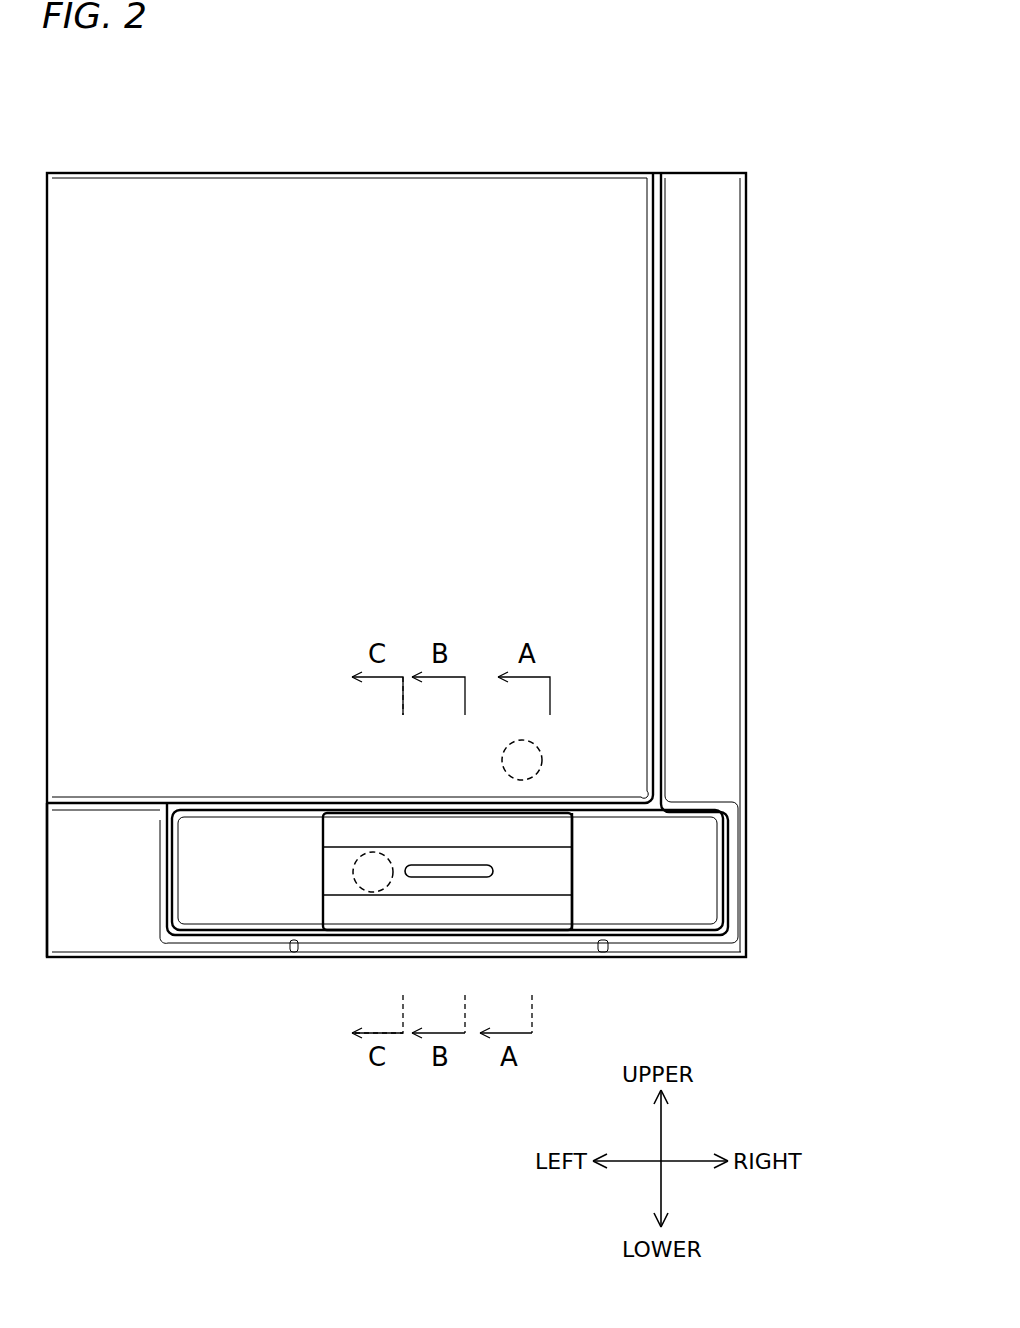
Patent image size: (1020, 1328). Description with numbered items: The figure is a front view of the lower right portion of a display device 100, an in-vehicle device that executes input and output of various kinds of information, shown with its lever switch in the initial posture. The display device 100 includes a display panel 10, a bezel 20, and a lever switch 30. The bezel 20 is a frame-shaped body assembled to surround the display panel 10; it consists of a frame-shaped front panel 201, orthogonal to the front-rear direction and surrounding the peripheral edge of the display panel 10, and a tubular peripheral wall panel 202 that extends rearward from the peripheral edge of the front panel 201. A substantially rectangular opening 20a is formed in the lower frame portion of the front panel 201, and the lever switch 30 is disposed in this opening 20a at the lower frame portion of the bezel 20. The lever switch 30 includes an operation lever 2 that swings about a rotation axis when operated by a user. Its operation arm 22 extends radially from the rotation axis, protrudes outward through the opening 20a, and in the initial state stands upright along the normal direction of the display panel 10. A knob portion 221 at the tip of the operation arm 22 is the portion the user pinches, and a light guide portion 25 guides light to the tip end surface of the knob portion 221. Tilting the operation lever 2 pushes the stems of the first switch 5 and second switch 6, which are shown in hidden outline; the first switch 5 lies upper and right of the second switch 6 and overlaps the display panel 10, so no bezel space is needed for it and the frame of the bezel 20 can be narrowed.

The display device 100 is at (112, 138).
The display panel 10 is at (413, 164).
The peripheral wall panel 202 is at (748, 660).
The first switch 5 is at (543, 760).
The opening 20a is at (572, 830).
The bezel 20 is at (108, 966).
The front panel 201 is at (62, 942).
The lever switch 30 is at (310, 872).
The operation lever 2 is at (320, 905).
The second switch 6 is at (373, 892).
The light guide portion 25 is at (478, 877).
The knob portion 221 is at (523, 897).
The operation arm 22 is at (573, 875).